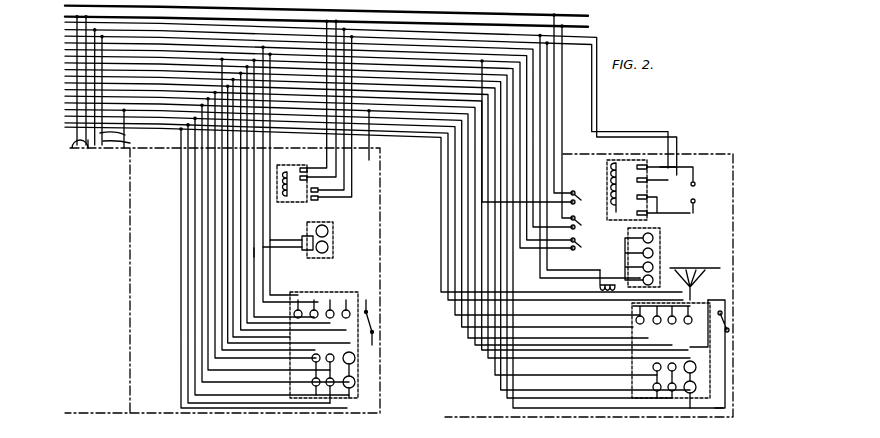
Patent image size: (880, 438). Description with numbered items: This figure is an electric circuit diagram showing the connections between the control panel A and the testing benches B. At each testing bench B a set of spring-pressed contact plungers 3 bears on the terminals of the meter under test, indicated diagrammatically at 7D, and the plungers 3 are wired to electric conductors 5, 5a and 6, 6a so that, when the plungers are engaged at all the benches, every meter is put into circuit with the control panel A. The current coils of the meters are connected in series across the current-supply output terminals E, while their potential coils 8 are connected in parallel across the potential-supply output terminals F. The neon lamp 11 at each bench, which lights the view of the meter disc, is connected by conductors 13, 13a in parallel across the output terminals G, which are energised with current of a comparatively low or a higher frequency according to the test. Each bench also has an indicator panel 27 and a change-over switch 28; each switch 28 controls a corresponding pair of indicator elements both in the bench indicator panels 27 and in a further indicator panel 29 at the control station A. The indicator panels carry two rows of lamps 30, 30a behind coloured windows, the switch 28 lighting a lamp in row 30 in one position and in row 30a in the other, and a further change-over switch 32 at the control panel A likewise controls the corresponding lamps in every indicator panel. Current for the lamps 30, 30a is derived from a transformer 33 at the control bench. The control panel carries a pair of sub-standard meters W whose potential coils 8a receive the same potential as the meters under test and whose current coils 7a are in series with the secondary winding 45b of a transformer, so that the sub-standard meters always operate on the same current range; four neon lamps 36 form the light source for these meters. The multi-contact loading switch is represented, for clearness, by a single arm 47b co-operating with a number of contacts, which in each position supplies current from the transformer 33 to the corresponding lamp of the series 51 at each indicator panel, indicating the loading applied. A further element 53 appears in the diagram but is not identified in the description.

The spring-pressed contact plungers 3 is at (300, 167).
The electric conductor 5 is at (80, 150).
The electric conductor 5a is at (88, 150).
The electric conductor 6 is at (110, 134).
The electric conductor 6a is at (120, 141).
The meter under test 7D is at (287, 198).
The current coils 7a is at (612, 190).
The potential coils 8 is at (320, 192).
The potential coils 8a is at (628, 163).
The neon lamps 11 is at (330, 238).
The conductor 13 is at (263, 250).
The conductor 13a is at (285, 262).
The indicator panel 27 is at (352, 290).
The change-over switch 28 is at (372, 320).
The further indicator panel 29 is at (692, 410).
The lamps 30 is at (332, 388).
The lamps 30a is at (355, 358).
The further change-over switch 32 is at (720, 310).
The transformer 33 is at (600, 283).
The neon lamps 36 is at (653, 268).
The secondary winding 45b is at (691, 190).
The single switch arm 47b is at (692, 262).
The series of lamps 51 is at (318, 283).
The conductor 53 is at (276, 432).
The control panel A is at (532, 418).
The testing benches B is at (264, 417).
The current-supply output terminals E is at (581, 199).
The potential-supply output terminals F is at (580, 223).
The output terminals G is at (581, 245).
The sub-standard meters W is at (648, 193).